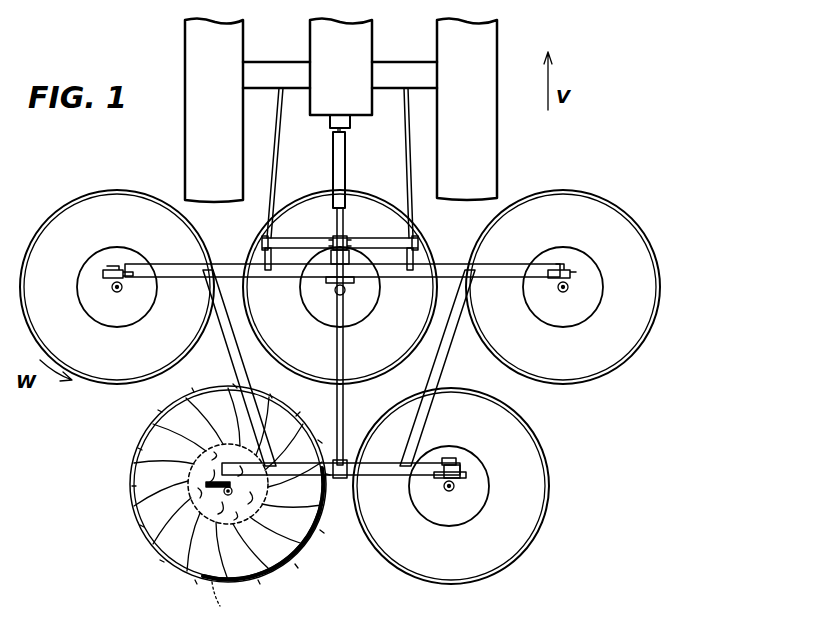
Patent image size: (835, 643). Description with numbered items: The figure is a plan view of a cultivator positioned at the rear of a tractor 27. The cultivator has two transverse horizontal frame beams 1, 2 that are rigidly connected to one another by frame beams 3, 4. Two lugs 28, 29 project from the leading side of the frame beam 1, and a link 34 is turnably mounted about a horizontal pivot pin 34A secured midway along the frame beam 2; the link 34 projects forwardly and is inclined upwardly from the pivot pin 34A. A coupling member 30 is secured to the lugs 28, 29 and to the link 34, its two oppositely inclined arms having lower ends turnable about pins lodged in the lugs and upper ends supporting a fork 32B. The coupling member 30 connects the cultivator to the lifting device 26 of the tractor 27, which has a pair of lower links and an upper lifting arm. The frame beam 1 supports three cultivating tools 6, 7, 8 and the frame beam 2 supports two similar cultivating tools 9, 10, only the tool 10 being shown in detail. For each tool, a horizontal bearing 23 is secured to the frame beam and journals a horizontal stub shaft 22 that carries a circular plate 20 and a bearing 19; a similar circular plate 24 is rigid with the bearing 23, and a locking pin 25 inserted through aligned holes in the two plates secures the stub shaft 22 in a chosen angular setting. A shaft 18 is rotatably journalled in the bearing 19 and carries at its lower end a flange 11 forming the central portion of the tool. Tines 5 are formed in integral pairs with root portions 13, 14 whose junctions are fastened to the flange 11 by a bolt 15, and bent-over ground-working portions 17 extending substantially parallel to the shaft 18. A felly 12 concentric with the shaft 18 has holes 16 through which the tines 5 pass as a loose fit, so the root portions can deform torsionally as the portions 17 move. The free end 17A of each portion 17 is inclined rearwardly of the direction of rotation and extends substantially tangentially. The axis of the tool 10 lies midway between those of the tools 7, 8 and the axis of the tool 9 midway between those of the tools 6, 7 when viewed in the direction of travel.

The frame beam 1 is at (445, 272).
The frame beam 2 is at (386, 470).
The frame beam 3 is at (442, 370).
The frame beam 4 is at (230, 340).
The tines 5 is at (233, 502).
The cultivating tool 6 is at (403, 333).
The cultivating tool 7 is at (252, 246).
The cultivating tool 8 is at (136, 188).
The cultivating tool 9 is at (364, 486).
The cultivating tool 10 is at (300, 560).
The flange 11 is at (558, 318).
The felly 12 is at (318, 536).
The root portion 13 is at (216, 560).
The root portion 14 is at (232, 545).
The bolt 15 is at (218, 493).
The holes 16 is at (244, 504).
The ground-working portion 17 is at (170, 568).
The free end 17A is at (195, 584).
The shaft 18 is at (228, 484).
The bearing 19 is at (121, 290).
The circular plate 20 is at (449, 486).
The stub shaft 22 is at (449, 456).
The bearing 23 is at (462, 462).
The circular plate 24 is at (468, 472).
The locking pin 25 is at (568, 288).
The lifting device 26 is at (378, 144).
The tractor 27 is at (500, 152).
The lug 28 is at (275, 276).
The lug 29 is at (412, 276).
The coupling member 30 is at (292, 230).
The fork 32B is at (345, 238).
The link 34 is at (341, 364).
The pivot pin 34A is at (348, 463).